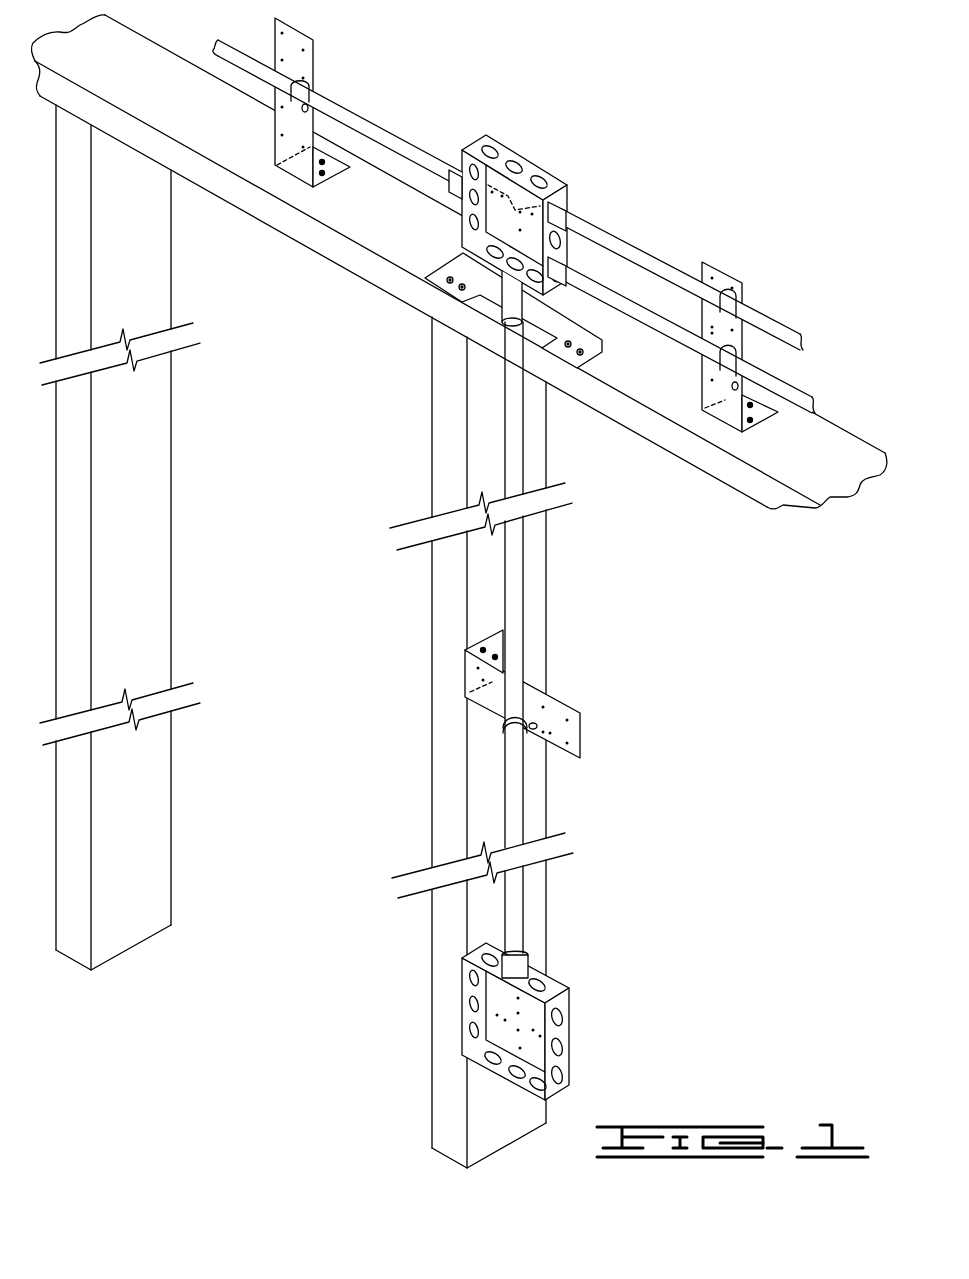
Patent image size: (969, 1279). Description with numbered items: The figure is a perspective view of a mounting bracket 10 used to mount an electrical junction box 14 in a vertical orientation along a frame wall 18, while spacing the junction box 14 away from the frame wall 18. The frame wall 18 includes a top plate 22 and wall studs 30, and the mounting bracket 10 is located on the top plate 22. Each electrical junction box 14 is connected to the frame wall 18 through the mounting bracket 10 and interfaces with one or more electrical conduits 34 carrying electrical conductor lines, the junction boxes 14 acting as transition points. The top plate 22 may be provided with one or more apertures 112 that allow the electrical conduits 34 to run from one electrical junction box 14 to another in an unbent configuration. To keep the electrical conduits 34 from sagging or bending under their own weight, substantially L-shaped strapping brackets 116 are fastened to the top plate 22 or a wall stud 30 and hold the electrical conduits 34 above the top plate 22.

The mounting bracket 10 is at (602, 338).
The electrical junction box 14 is at (536, 163).
The frame wall 18 is at (459, 298).
The top plate 22 is at (848, 453).
The wall stud 30 is at (432, 801).
The electrical conduit 34 is at (384, 131).
The aperture 112 is at (490, 323).
The strapping bracket 116 is at (328, 35).